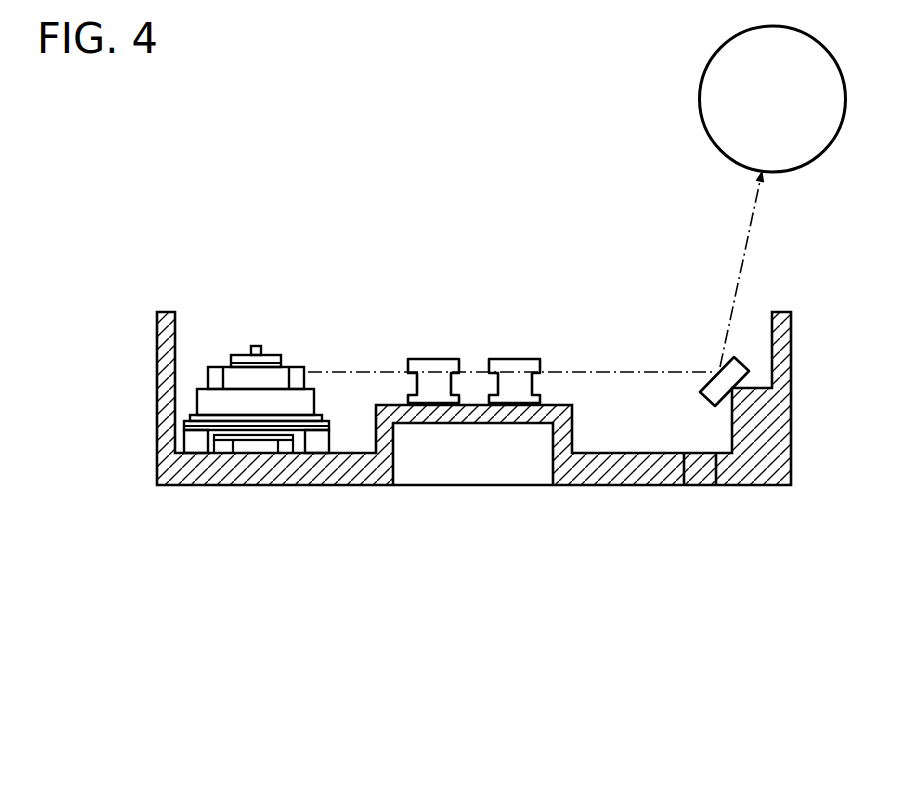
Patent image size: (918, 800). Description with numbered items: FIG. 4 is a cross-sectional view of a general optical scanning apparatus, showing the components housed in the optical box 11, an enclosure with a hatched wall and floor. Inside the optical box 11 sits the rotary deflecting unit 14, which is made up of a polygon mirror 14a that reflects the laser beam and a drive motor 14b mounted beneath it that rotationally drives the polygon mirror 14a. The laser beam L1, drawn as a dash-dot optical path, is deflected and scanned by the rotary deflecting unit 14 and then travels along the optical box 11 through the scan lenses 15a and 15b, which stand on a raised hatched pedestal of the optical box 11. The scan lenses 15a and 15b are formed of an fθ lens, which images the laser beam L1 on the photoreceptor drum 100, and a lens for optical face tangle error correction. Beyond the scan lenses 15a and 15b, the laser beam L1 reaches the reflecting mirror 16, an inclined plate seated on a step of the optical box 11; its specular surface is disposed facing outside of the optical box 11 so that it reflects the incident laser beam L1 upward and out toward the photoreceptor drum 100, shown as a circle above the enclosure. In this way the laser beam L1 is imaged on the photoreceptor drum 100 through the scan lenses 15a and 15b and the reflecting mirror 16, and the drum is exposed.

The optical box 11 is at (157, 468).
The rotary deflecting unit 14 is at (192, 399).
The polygon mirror 14a is at (208, 375).
The drive motor 14b is at (197, 406).
The scan lens 15a is at (441, 359).
The scan lens 15b is at (522, 359).
The reflecting mirror 16 is at (703, 400).
The laser beam L1 is at (620, 372).
The photoreceptor drum 100 is at (699, 100).